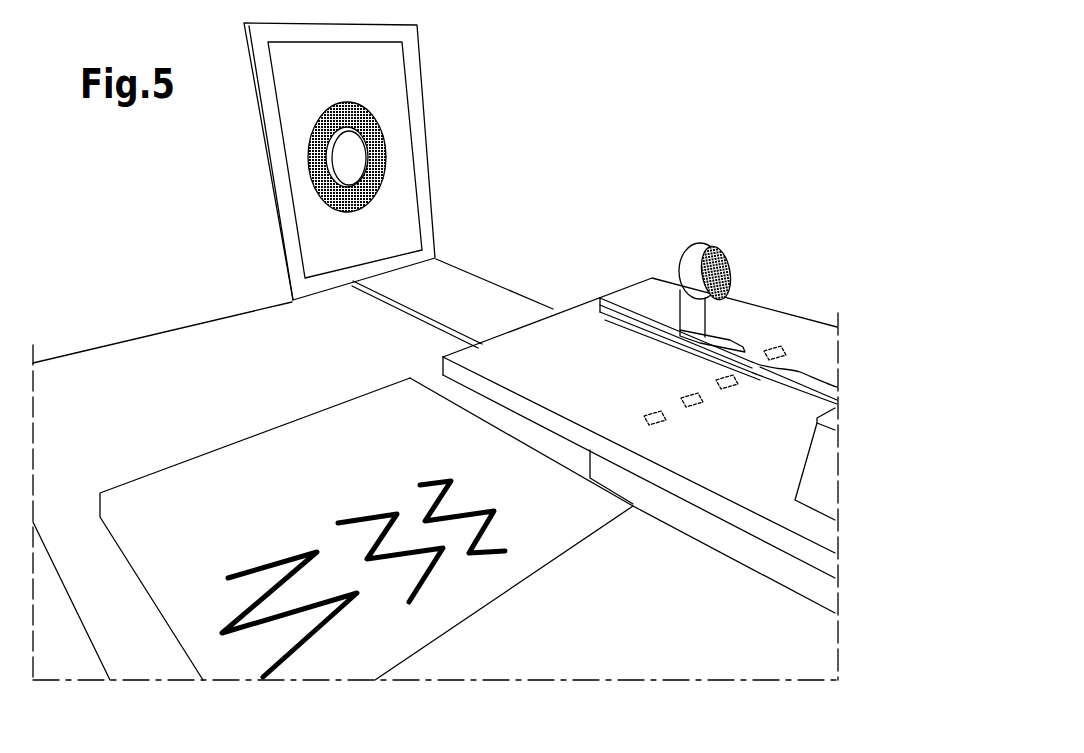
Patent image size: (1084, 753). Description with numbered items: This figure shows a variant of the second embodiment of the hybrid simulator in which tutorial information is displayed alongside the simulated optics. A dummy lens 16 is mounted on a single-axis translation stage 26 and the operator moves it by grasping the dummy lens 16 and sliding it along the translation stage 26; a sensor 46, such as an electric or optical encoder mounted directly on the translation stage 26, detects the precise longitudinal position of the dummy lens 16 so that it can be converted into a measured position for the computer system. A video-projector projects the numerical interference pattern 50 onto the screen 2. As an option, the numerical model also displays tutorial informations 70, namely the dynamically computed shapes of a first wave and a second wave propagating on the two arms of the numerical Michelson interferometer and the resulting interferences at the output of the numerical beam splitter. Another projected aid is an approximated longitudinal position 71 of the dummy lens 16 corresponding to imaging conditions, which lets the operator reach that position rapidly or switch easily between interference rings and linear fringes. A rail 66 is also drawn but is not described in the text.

The screen 2 is at (290, 247).
The numerical interference pattern 50 is at (358, 160).
The guide rail 66 is at (445, 323).
The single-axis translation stage 26 is at (633, 307).
The dummy lens 16 is at (730, 268).
The sensor 46 is at (760, 353).
The tutorial informations 70 is at (430, 480).
The approximated longitudinal position 71 is at (597, 357).